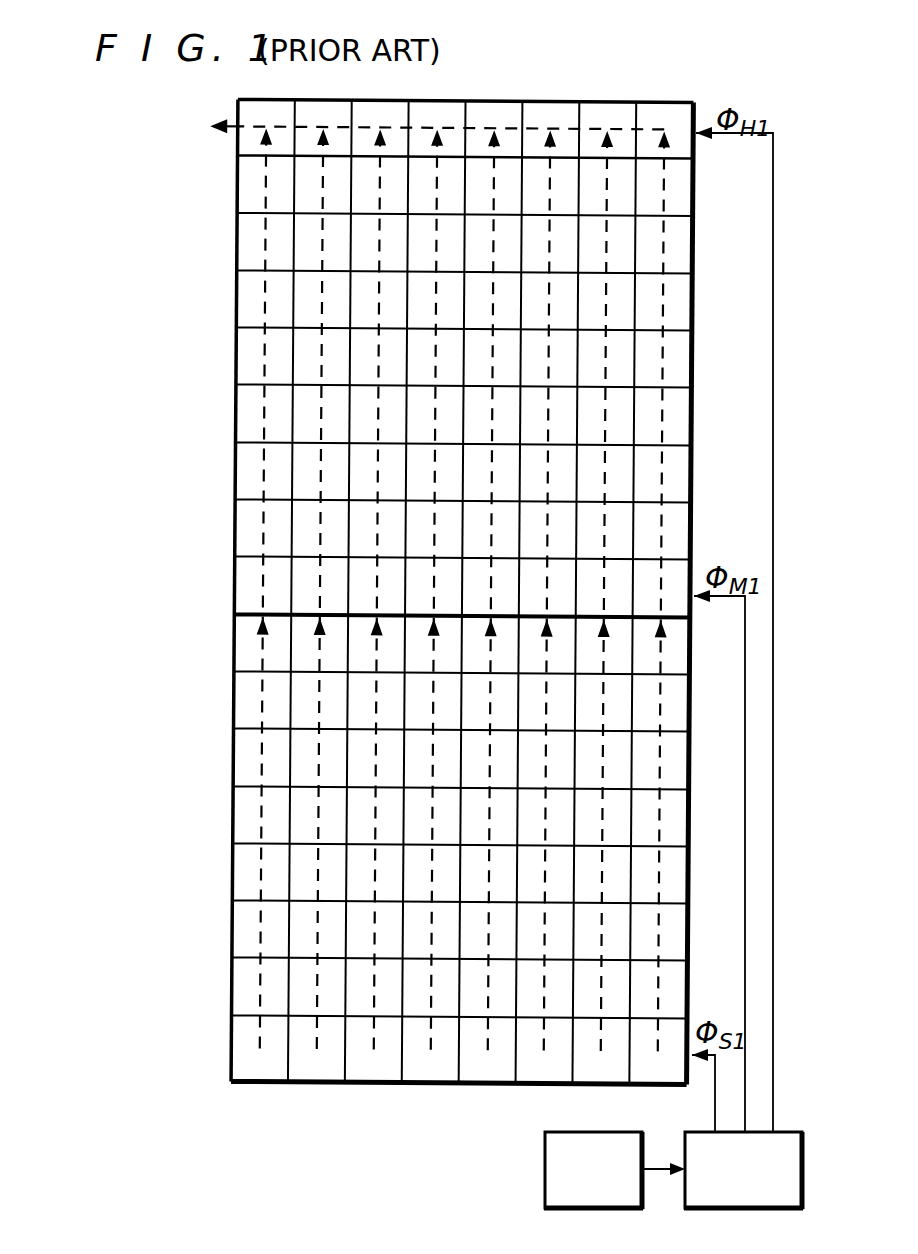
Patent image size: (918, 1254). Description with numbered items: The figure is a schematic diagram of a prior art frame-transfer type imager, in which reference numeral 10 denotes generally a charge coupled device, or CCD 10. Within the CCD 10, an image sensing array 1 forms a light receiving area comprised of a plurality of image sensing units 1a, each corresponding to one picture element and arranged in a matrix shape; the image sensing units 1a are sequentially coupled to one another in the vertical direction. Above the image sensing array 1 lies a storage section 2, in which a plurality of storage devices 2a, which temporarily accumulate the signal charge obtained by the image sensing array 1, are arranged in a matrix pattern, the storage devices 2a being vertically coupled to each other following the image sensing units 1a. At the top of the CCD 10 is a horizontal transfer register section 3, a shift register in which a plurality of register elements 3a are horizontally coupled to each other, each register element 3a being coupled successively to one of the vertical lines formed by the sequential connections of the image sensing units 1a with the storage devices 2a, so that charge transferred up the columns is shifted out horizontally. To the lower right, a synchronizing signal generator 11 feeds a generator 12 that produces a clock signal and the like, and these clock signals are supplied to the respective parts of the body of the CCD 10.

The image sensing array 1 is at (232, 619).
The image sensing unit 1a is at (272, 1078).
The storage section 2 is at (232, 160).
The storage device 2a is at (693, 527).
The horizontal transfer register section 3 is at (695, 96).
The register element 3a is at (240, 140).
The charge coupled device 10 is at (203, 636).
The synchronizing signal generator 11 is at (545, 1180).
The clock signal generator 12 is at (802, 1185).